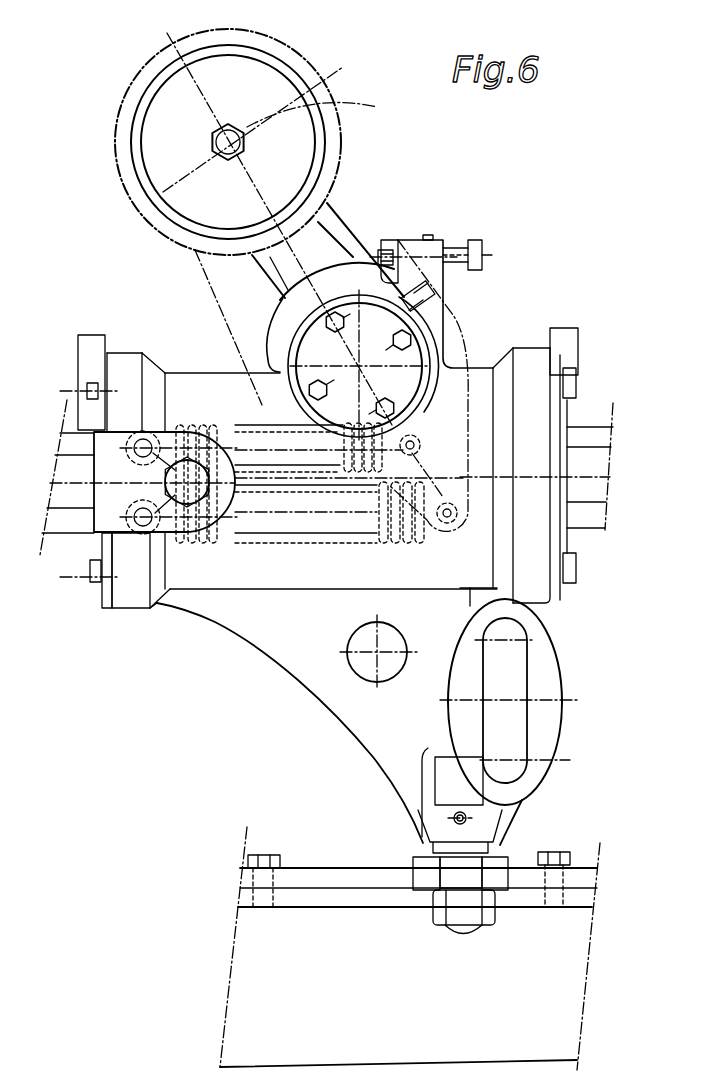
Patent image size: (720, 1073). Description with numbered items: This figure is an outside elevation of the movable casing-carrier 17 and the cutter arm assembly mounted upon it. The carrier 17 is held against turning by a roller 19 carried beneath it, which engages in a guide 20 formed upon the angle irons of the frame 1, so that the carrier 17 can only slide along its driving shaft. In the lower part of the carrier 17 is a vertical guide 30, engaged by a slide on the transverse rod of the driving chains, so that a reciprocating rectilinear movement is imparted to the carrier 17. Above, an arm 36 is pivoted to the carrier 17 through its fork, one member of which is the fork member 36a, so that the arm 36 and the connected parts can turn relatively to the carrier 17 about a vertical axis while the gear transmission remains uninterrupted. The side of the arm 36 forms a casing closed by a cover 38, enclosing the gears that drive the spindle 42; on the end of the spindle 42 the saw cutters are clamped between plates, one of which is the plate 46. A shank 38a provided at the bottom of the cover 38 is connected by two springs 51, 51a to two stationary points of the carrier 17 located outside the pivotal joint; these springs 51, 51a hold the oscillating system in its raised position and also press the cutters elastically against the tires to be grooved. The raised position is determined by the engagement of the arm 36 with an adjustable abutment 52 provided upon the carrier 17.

The frame 1 is at (410, 948).
The movable casing-carrier 17 is at (349, 502).
The roller 19 is at (413, 862).
The guide 20 is at (528, 868).
The vertical guide 30 is at (509, 702).
The arm 36 is at (330, 222).
The fork member 36a is at (330, 317).
The cover 38 is at (462, 333).
The shank 38a is at (460, 447).
The spindle 42 is at (228, 128).
The plate 46 is at (135, 163).
The spring 51 is at (205, 432).
The spring 51a is at (194, 498).
The adjustable abutment 52 is at (386, 250).